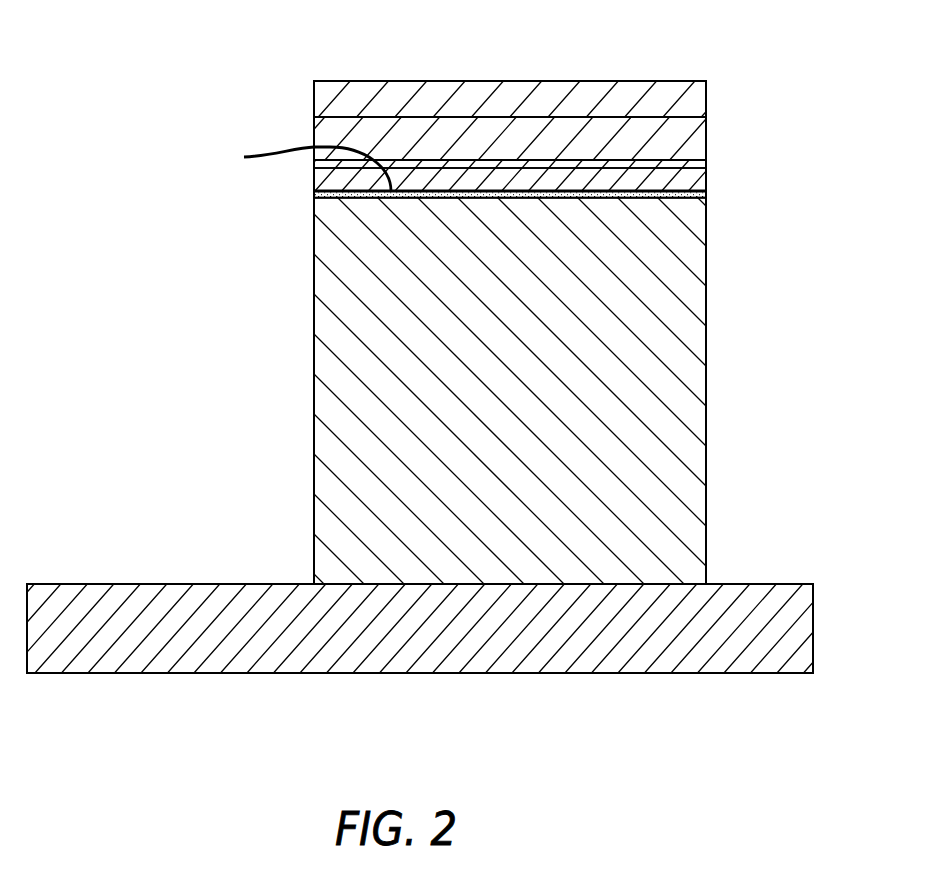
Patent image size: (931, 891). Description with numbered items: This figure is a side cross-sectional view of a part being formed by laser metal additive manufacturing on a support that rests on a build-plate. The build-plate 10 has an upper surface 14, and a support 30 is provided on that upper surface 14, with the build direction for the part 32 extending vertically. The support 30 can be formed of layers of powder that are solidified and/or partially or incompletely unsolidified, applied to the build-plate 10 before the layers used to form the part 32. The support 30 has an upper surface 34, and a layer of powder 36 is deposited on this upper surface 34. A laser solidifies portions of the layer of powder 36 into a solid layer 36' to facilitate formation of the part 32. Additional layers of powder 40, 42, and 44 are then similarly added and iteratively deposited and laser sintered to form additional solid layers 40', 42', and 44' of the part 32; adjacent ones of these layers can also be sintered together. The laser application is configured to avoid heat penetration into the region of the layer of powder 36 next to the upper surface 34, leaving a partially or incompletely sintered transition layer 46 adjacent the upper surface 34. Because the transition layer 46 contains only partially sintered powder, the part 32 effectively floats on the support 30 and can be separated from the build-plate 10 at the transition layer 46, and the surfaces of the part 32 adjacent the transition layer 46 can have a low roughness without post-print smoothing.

The build-plate 10 is at (816, 633).
The upper surface of the build-plate 14 is at (777, 584).
The support 30 is at (700, 421).
The part 32 is at (710, 130).
The upper surface of the support 34 is at (304, 167).
The layer of powder 36 is at (557, 183).
The solid layer 36' is at (468, 181).
The layer of powder 40 is at (572, 147).
The solid layer 40' is at (510, 164).
The layer of powder 42 is at (435, 128).
The solid layer 42' is at (510, 138).
The layer of powder 44 is at (540, 71).
The solid layer 44' is at (510, 99).
The transition layer 46 is at (320, 192).